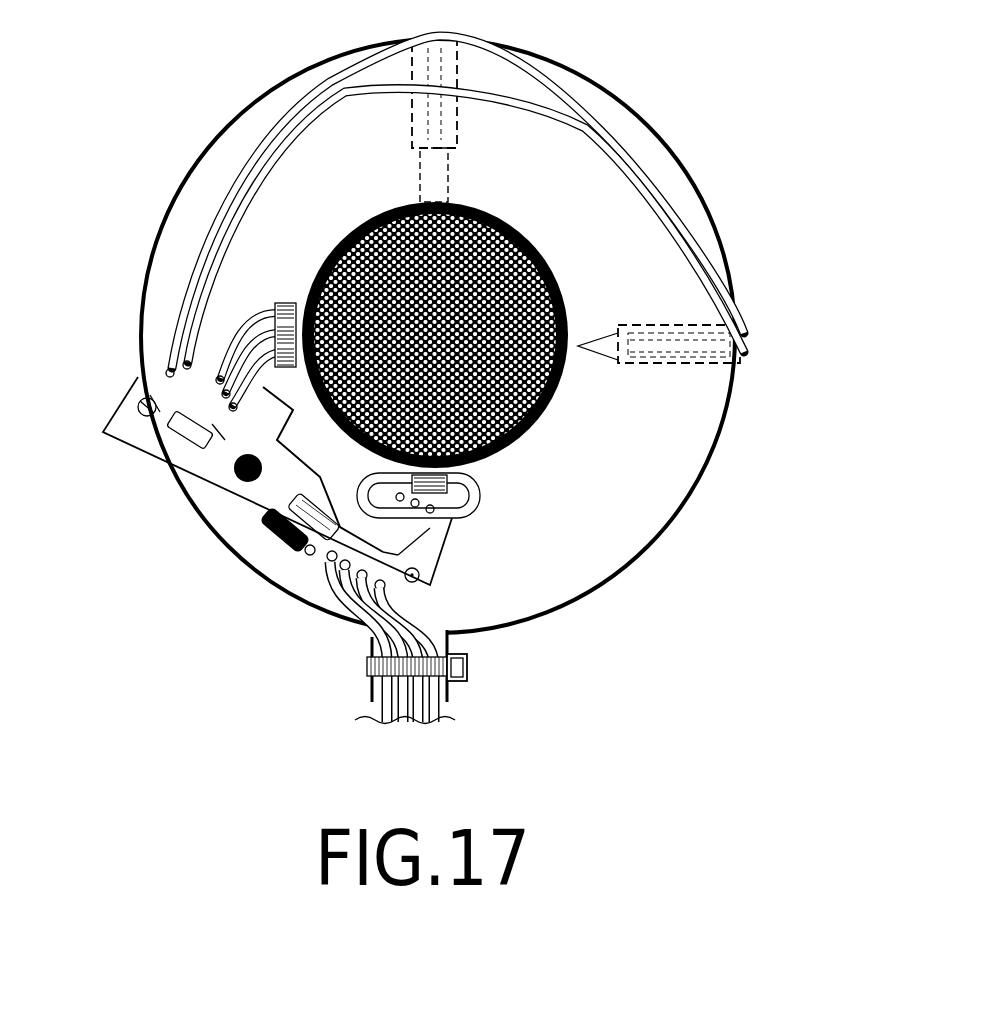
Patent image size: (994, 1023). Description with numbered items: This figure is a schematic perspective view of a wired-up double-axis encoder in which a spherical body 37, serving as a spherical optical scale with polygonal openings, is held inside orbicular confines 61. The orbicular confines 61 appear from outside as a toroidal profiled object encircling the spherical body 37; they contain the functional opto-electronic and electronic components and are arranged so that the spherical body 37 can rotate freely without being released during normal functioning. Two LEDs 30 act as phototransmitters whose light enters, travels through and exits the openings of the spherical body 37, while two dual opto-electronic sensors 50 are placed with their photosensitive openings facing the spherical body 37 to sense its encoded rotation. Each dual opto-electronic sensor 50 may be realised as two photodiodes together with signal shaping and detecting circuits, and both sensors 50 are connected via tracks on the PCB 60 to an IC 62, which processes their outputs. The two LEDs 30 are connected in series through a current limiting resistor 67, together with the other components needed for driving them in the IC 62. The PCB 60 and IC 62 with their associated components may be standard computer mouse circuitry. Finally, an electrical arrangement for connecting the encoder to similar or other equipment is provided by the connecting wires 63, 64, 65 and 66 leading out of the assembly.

The LED 30 is at (462, 150).
The spherical body 37 is at (545, 422).
The dual opto-electronic sensor 50 is at (275, 306).
The PCB 60 is at (198, 477).
The orbicular confines 61 is at (525, 545).
The IC 62 is at (234, 468).
The connecting wire 63 is at (367, 673).
The connecting wire 64 is at (365, 703).
The connecting wire 65 is at (443, 723).
The connecting wire 66 is at (467, 677).
The current limiting resistor 67 is at (137, 423).